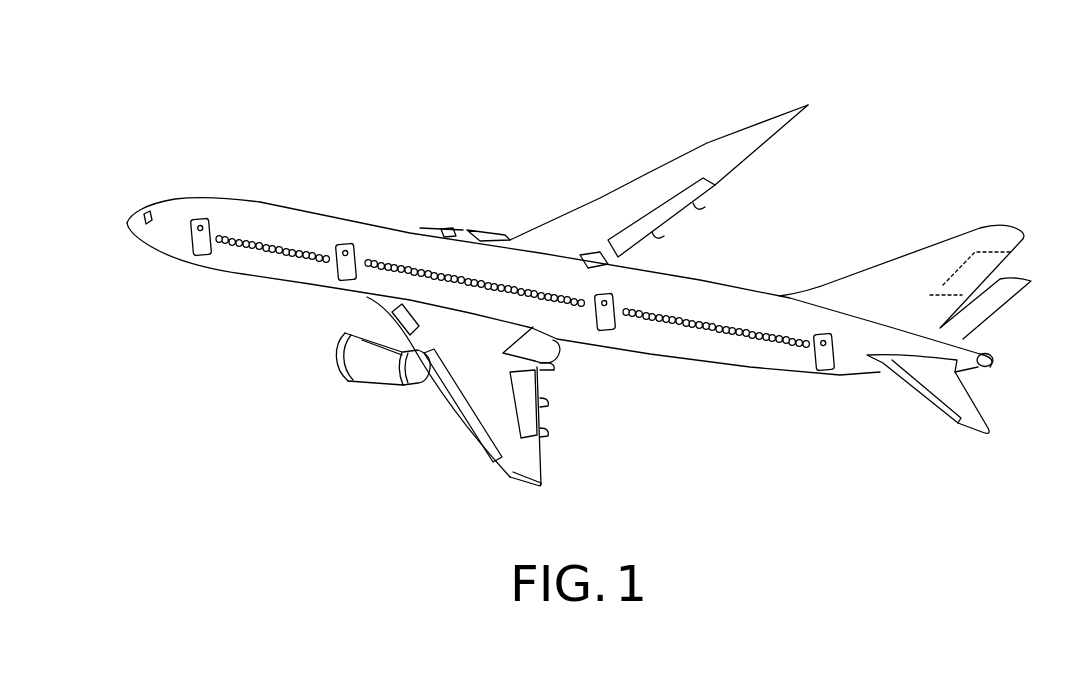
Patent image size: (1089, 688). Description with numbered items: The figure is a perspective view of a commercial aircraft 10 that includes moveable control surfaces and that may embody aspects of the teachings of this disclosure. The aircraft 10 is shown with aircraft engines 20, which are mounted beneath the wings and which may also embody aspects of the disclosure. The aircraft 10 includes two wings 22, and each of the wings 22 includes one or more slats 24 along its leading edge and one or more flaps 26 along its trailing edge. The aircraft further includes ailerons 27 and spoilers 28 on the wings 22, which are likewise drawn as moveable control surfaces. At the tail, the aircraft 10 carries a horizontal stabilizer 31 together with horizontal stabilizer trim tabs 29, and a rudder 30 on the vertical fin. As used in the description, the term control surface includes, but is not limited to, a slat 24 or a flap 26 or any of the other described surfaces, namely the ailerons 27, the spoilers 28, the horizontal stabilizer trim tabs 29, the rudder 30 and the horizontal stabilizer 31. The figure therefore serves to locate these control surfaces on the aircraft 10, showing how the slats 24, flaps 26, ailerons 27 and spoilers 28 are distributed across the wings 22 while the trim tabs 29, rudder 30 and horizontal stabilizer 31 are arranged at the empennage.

The aircraft 10 is at (874, 157).
The aircraft engines 20 is at (462, 232).
The wings 22 is at (650, 181).
The slats 24 is at (460, 428).
The flaps 26 is at (688, 212).
The ailerons 27 is at (753, 153).
The spoilers 28 is at (708, 145).
The horizontal stabilizer trim tabs 29 is at (910, 393).
The rudder 30 is at (975, 271).
The horizontal stabilizer 31 is at (957, 383).